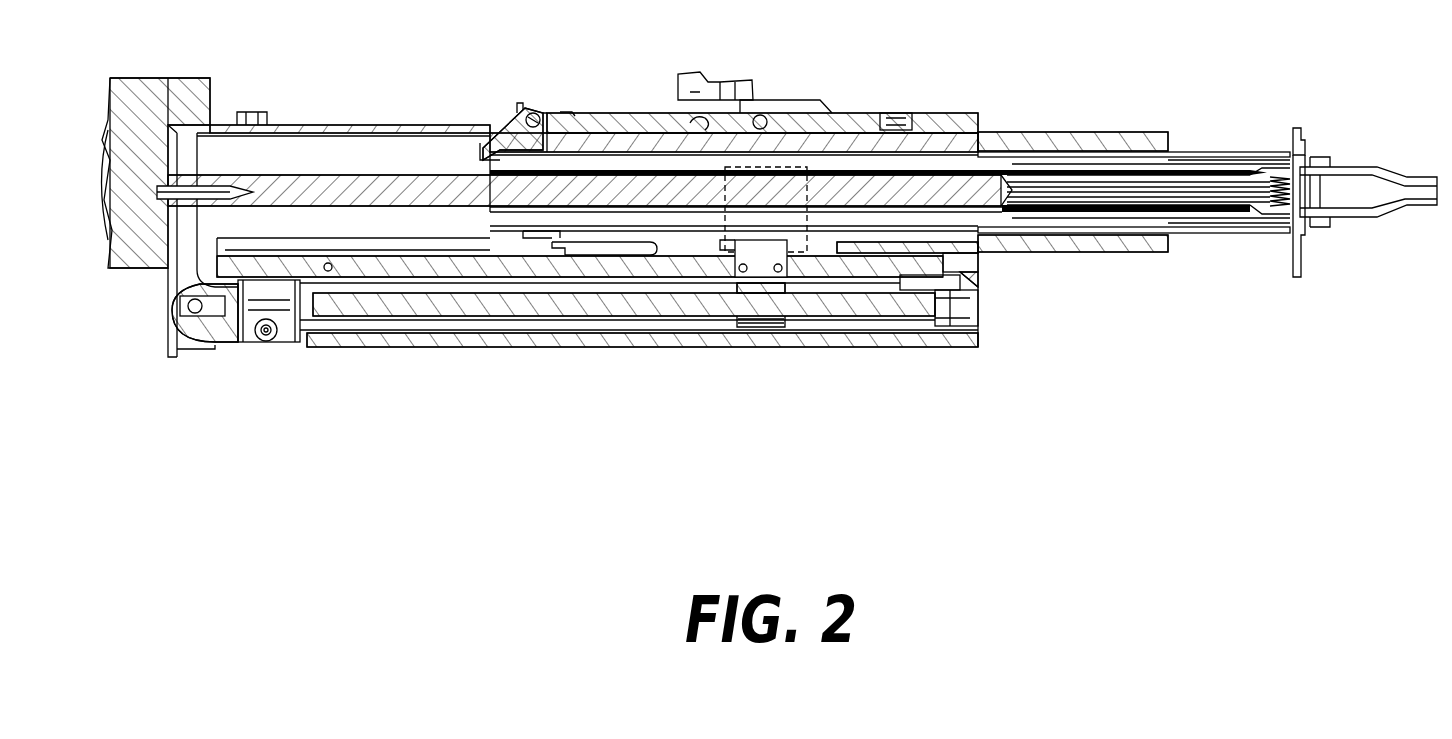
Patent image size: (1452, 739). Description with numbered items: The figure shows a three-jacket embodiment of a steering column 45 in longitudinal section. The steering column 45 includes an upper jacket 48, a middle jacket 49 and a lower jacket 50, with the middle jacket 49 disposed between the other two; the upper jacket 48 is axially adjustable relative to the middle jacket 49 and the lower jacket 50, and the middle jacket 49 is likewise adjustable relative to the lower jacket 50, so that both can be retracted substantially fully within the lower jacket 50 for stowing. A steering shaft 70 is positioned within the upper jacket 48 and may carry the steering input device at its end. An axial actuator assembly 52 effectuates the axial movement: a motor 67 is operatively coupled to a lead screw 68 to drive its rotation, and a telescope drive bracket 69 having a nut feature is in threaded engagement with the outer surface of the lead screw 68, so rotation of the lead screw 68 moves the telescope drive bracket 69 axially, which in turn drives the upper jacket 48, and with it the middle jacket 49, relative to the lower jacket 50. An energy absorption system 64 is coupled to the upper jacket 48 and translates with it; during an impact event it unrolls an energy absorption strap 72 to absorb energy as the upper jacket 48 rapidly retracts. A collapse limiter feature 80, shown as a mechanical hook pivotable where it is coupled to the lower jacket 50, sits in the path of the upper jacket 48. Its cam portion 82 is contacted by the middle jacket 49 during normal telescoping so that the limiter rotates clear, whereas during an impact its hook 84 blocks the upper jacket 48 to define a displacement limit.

The steering column 45 is at (886, 90).
The upper jacket 48 is at (1220, 152).
The middle jacket 49 is at (1082, 132).
The lower jacket 50 is at (328, 122).
The axial actuator assembly 52 is at (400, 348).
The energy absorption system 64 is at (630, 264).
The motor 67 is at (255, 343).
The lead screw 68 is at (597, 305).
The telescope drive bracket 69 is at (762, 265).
The steering shaft 70 is at (1310, 165).
The energy absorption strap 72 is at (612, 238).
The collapse limiter feature 80 is at (512, 117).
The cam portion 82 is at (545, 135).
The hook 84 is at (480, 140).